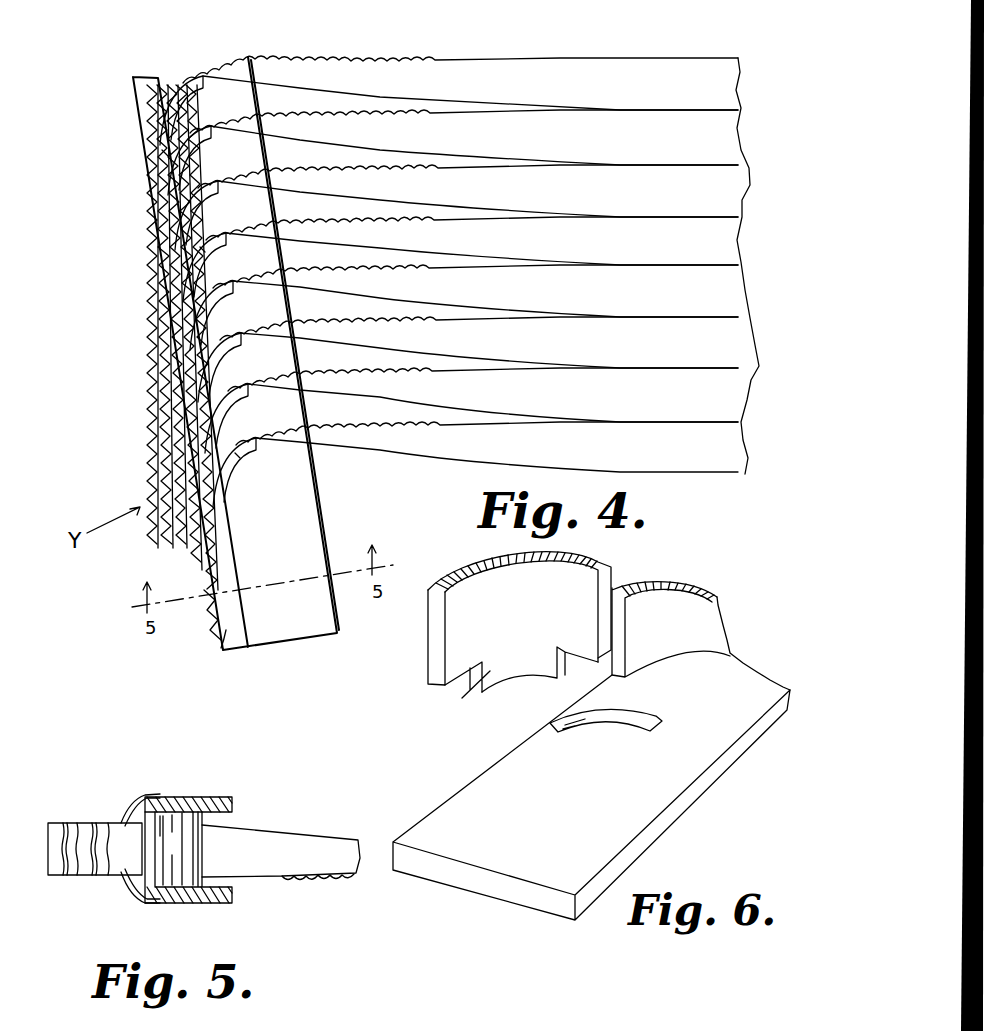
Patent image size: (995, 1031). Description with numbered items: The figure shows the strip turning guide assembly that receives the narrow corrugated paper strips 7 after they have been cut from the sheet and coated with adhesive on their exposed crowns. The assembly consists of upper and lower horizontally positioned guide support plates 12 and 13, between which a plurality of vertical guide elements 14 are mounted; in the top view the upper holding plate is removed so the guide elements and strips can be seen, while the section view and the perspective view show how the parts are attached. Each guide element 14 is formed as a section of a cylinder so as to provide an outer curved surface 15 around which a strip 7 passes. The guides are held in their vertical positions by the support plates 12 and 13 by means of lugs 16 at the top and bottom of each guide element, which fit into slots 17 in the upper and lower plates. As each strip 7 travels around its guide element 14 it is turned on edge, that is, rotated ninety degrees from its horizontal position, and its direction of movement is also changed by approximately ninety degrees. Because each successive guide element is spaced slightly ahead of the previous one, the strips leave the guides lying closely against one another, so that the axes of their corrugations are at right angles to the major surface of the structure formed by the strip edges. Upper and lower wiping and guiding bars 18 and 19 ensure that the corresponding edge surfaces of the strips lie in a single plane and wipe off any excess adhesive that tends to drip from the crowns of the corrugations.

In FIG. 4, the strips 7 is at (653, 85).
In FIG. 5, the strips 7 is at (272, 837).
In FIG. 5, the upper guide support plate 12 is at (208, 798).
In FIG. 4, the lower guide support plate 13 is at (303, 508).
In FIG. 5, the lower guide support plate 13 is at (200, 893).
In FIG. 6, the lower guide support plate 13 is at (480, 852).
In FIG. 4, the guide elements 14 is at (210, 183).
In FIG. 5, the guide elements 14 is at (158, 795).
In FIG. 6, the guide elements 14 is at (455, 630).
In FIG. 4, the outer curved surfaces 15 is at (164, 88).
In FIG. 4, the lugs 16 is at (200, 247).
In FIG. 6, the lugs 16 is at (487, 667).
In FIG. 6, the slots 17 is at (635, 720).
In FIG. 5, the upper wiping and guiding bar 18 is at (130, 818).
In FIG. 4, the lower wiping and guiding bar 19 is at (228, 632).
In FIG. 5, the lower wiping and guiding bar 19 is at (123, 890).